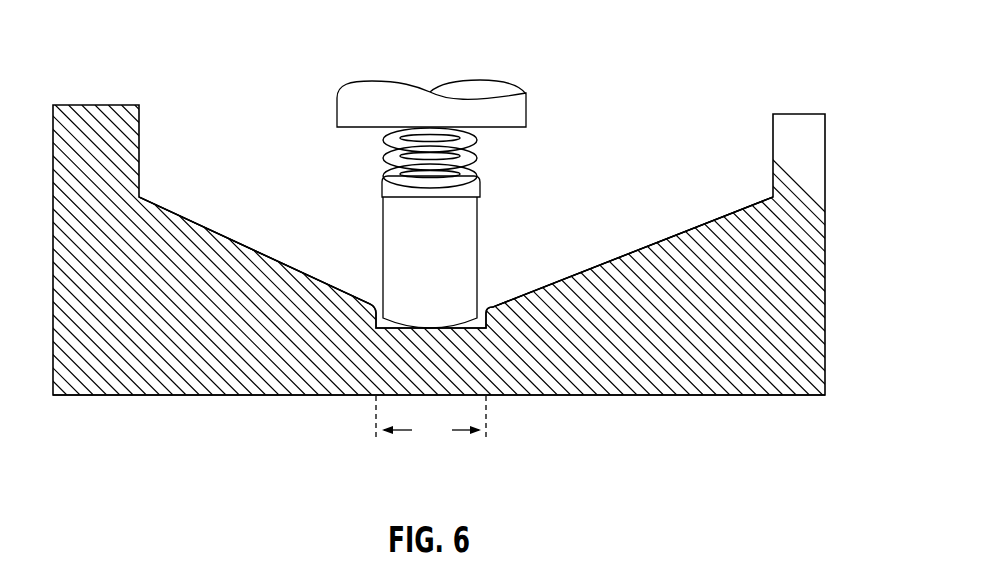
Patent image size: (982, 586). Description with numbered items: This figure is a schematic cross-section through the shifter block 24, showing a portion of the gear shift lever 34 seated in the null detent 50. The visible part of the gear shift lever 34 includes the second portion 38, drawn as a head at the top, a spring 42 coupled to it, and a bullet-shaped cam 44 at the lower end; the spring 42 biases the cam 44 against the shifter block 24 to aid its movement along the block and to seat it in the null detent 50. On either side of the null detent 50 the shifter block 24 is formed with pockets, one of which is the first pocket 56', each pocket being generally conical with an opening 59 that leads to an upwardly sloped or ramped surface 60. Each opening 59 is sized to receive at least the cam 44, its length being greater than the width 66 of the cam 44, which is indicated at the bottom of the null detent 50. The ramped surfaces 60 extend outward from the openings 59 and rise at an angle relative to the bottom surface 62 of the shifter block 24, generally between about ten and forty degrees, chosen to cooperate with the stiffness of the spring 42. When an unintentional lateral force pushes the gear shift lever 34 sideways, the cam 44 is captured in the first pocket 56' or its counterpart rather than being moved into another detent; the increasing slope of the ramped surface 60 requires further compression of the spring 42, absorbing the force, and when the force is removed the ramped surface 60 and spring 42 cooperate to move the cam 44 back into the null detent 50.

The shifter block 24 is at (615, 41).
The gear shift lever 34 is at (408, 164).
The second portion 38 is at (327, 109).
The spring 42 is at (480, 138).
The cam 44 is at (478, 234).
The null detent 50 is at (431, 316).
The first pocket 56' is at (254, 239).
The opening 59 is at (373, 303).
The ramped surface 60 is at (241, 246).
The bottom surface 62 is at (790, 396).
The width 66 is at (431, 422).